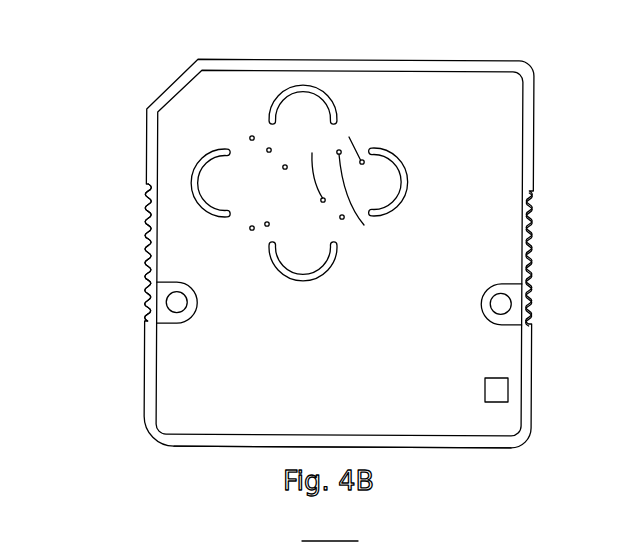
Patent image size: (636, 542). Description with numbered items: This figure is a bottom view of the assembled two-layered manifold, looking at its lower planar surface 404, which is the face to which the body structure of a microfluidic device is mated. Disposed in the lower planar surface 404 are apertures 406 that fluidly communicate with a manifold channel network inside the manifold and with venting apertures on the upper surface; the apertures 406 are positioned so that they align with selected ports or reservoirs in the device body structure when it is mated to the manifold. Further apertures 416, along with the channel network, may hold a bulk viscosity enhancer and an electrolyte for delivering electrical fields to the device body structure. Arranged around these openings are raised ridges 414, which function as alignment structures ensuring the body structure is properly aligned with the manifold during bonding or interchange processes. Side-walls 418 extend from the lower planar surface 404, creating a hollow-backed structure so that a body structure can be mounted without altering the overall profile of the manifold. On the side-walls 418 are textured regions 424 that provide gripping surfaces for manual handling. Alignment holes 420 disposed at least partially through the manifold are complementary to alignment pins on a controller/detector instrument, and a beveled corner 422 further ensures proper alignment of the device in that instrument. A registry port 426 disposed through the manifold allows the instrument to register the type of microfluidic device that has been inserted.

The lower planar surface 404 is at (185, 392).
The apertures 406 is at (252, 136).
The raised ridges 414 is at (210, 150).
The apertures 416 is at (267, 150).
The side-walls 418 is at (202, 439).
The alignment holes 420 is at (176, 302).
The beveled corner 422 is at (160, 74).
The textured regions 424 is at (147, 231).
The registry port 426 is at (497, 388).